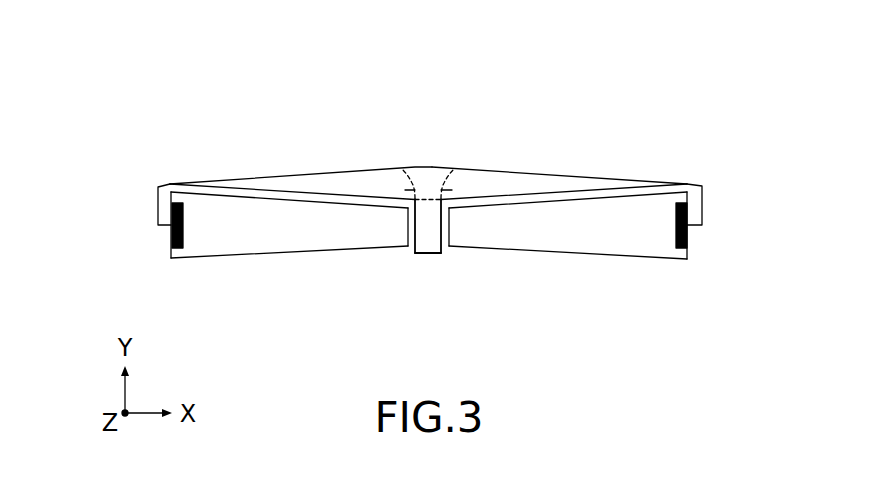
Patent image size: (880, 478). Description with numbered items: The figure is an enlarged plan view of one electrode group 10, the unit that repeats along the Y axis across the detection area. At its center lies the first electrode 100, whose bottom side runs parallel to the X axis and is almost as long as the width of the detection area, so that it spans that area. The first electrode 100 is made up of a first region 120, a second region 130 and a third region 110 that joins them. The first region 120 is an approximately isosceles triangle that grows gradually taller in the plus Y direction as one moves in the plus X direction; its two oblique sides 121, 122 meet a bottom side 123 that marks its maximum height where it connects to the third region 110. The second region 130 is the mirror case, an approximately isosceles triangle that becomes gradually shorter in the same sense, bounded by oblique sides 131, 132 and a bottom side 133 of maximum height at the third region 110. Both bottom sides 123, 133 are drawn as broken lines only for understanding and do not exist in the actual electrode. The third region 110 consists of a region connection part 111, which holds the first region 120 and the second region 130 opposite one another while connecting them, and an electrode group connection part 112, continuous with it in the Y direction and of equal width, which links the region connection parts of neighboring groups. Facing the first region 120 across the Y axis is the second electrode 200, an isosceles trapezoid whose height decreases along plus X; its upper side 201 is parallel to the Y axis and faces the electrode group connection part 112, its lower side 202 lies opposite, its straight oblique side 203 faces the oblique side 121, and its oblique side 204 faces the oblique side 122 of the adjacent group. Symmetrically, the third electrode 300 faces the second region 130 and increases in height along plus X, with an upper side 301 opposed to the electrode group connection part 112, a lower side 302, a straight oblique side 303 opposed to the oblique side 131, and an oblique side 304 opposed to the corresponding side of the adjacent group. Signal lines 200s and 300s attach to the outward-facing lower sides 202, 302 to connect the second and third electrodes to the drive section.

The electrode group 10 is at (508, 78).
The first electrode 100 is at (657, 168).
The third region 110 is at (430, 241).
The region connection part 111 is at (428, 192).
The electrode group connection part 112 is at (442, 254).
The first region 120 is at (295, 180).
The oblique side 121 is at (242, 188).
The oblique side 122 is at (338, 172).
The bottom side 123 is at (410, 177).
The second region 130 is at (570, 183).
The oblique side 131 is at (610, 188).
The oblique side 132 is at (518, 172).
The bottom side 133 is at (448, 172).
The second electrode 200 is at (202, 272).
The signal line 200s is at (157, 202).
The upper side 201 is at (407, 224).
The lower side 202 is at (170, 258).
The oblique side 203 is at (315, 203).
The oblique side 204 is at (267, 254).
The third electrode 300 is at (664, 272).
The signal line 300s is at (702, 205).
The upper side 301 is at (450, 224).
The lower side 302 is at (688, 254).
The oblique side 303 is at (560, 204).
The oblique side 304 is at (607, 253).